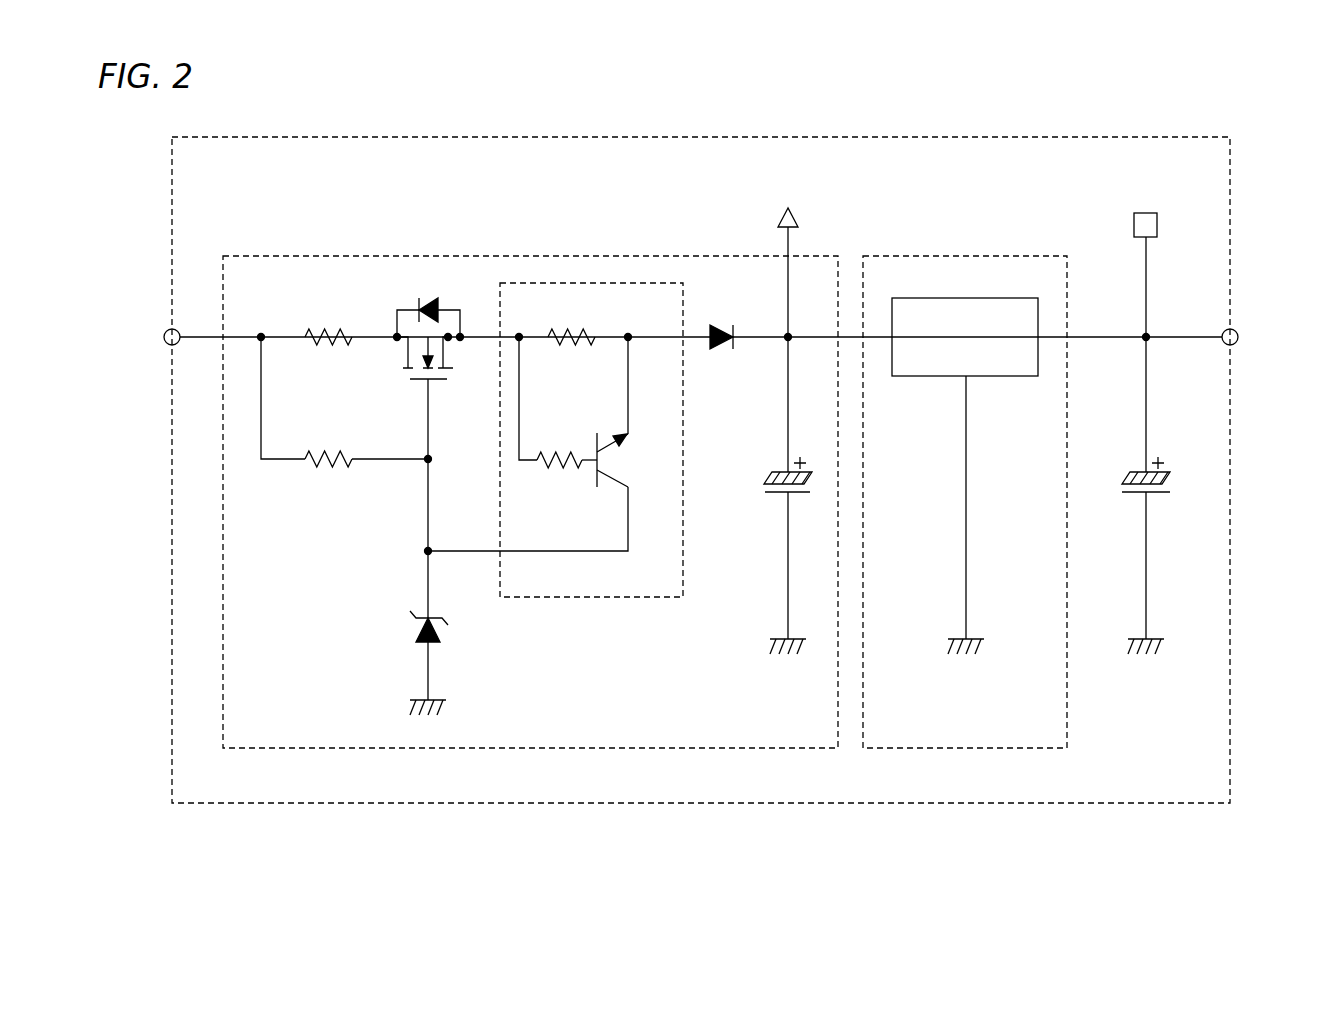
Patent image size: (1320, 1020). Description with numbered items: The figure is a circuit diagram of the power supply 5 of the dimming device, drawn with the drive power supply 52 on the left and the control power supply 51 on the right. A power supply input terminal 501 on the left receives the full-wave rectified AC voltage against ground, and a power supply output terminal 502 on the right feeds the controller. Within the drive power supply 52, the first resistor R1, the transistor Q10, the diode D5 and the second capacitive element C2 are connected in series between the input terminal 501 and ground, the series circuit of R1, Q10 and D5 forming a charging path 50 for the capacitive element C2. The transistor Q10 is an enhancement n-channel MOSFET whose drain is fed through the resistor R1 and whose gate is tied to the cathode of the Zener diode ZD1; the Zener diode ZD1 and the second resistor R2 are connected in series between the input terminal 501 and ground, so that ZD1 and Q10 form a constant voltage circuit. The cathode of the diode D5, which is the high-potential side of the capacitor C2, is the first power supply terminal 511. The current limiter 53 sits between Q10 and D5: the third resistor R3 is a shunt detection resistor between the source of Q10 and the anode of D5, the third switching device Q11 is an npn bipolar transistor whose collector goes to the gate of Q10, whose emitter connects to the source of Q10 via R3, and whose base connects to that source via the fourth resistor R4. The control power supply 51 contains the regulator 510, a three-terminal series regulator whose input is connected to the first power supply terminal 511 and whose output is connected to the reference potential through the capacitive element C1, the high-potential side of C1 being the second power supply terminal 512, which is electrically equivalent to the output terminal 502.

The power supply 5 is at (695, 137).
The charging path 50 is at (434, 365).
The control power supply 51 is at (965, 254).
The drive power supply 52 is at (370, 254).
The current limiter 53 is at (597, 600).
The power supply input terminal 501 is at (166, 333).
The power supply output terminal 502 is at (1237, 332).
The regulator 510 is at (997, 380).
The first power supply terminal 511 is at (797, 212).
The second power supply terminal 512 is at (1157, 222).
The first resistor R1 is at (328, 319).
The second resistor R2 is at (328, 441).
The third resistor R3 is at (571, 319).
The fourth resistor R4 is at (559, 442).
The transistor Q10 is at (397, 402).
The third switching device Q11 is at (634, 460).
The diode D5 is at (723, 319).
The Zener diode ZD1 is at (405, 579).
The capacitive element C1 is at (1131, 488).
The second capacitive element C2 is at (771, 488).